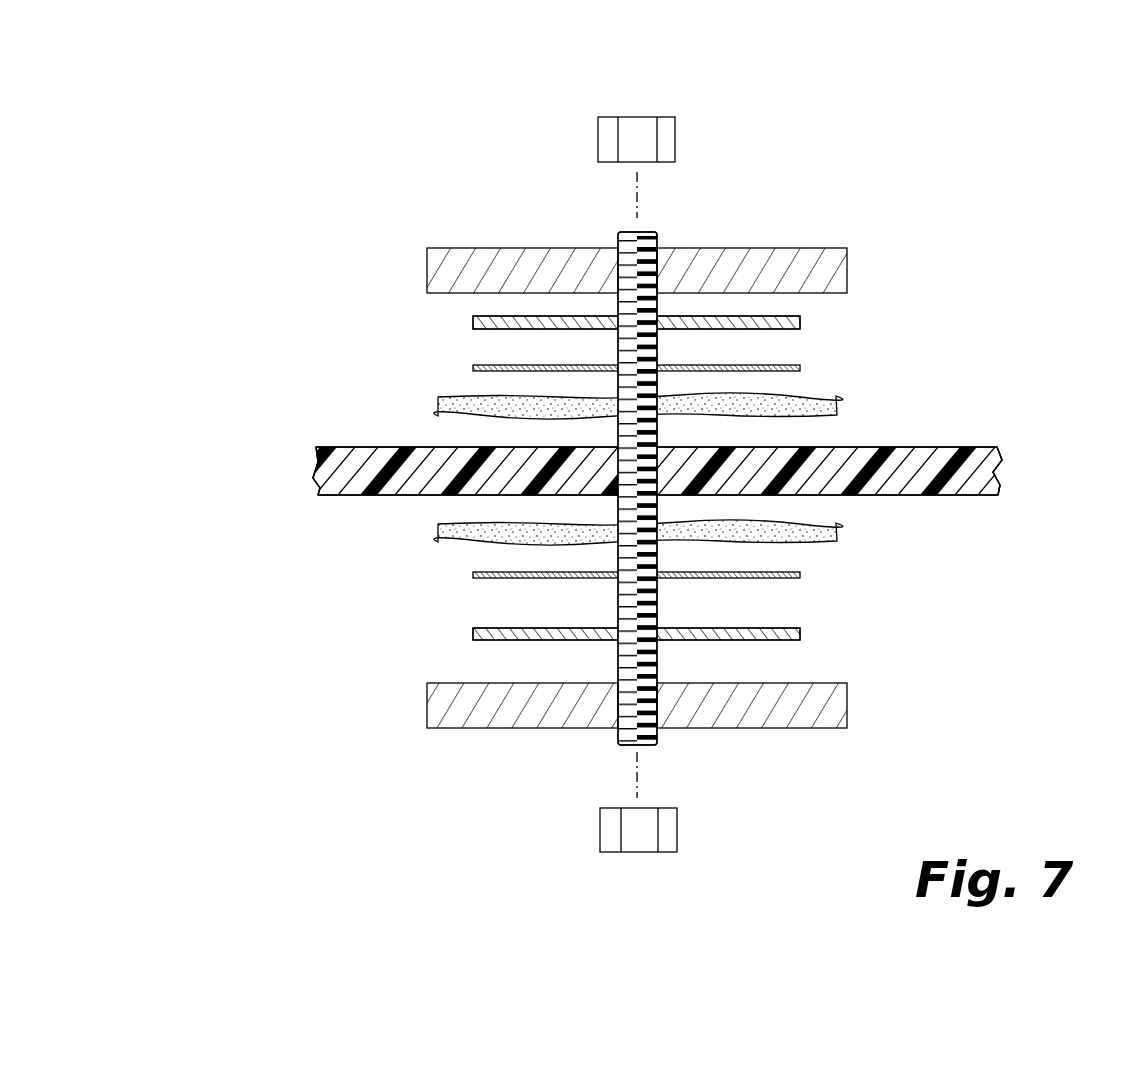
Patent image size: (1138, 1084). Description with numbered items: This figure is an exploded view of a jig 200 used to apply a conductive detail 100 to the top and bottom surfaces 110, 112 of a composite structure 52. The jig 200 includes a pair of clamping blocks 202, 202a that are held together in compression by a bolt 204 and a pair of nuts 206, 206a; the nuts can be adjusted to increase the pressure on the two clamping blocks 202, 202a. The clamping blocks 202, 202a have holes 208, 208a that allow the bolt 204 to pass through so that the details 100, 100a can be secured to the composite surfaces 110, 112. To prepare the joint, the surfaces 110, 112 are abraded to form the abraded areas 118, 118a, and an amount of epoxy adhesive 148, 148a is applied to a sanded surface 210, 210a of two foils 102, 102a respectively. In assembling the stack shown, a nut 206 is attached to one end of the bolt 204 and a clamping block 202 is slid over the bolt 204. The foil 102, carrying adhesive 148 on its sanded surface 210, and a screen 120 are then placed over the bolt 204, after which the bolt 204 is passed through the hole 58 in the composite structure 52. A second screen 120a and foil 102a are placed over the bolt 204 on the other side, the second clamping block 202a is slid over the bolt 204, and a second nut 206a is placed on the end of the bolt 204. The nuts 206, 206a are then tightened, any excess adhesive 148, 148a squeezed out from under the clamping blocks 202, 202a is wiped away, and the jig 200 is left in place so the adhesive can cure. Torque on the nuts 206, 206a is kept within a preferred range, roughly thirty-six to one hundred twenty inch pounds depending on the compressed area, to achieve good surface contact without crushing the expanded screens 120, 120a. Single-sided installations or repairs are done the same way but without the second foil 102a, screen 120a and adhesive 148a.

The jig 200 is at (262, 103).
The clamping block 202 is at (758, 255).
The second clamping block 202a is at (778, 718).
The bolt 204 is at (645, 234).
The nut 206 is at (640, 130).
The second nut 206a is at (672, 830).
The hole 208 is at (618, 258).
The hole 208a is at (660, 697).
The sanded surface 210 is at (497, 329).
The sanded surface 210a is at (490, 628).
The conductive detail 100 is at (652, 355).
The second conductive detail 100a is at (665, 599).
The foil 102 is at (800, 322).
The second foil 102a is at (695, 655).
The screen 120 is at (768, 366).
The second screen 120a is at (706, 578).
The epoxy adhesive 148 is at (452, 397).
The epoxy adhesive 148a is at (458, 543).
The top surface 110 is at (345, 447).
The composite structure 52 is at (332, 462).
The bottom surface 112 is at (337, 495).
The abraded area 118 is at (510, 447).
The abraded area 118a is at (510, 494).
The hole 58 is at (665, 473).